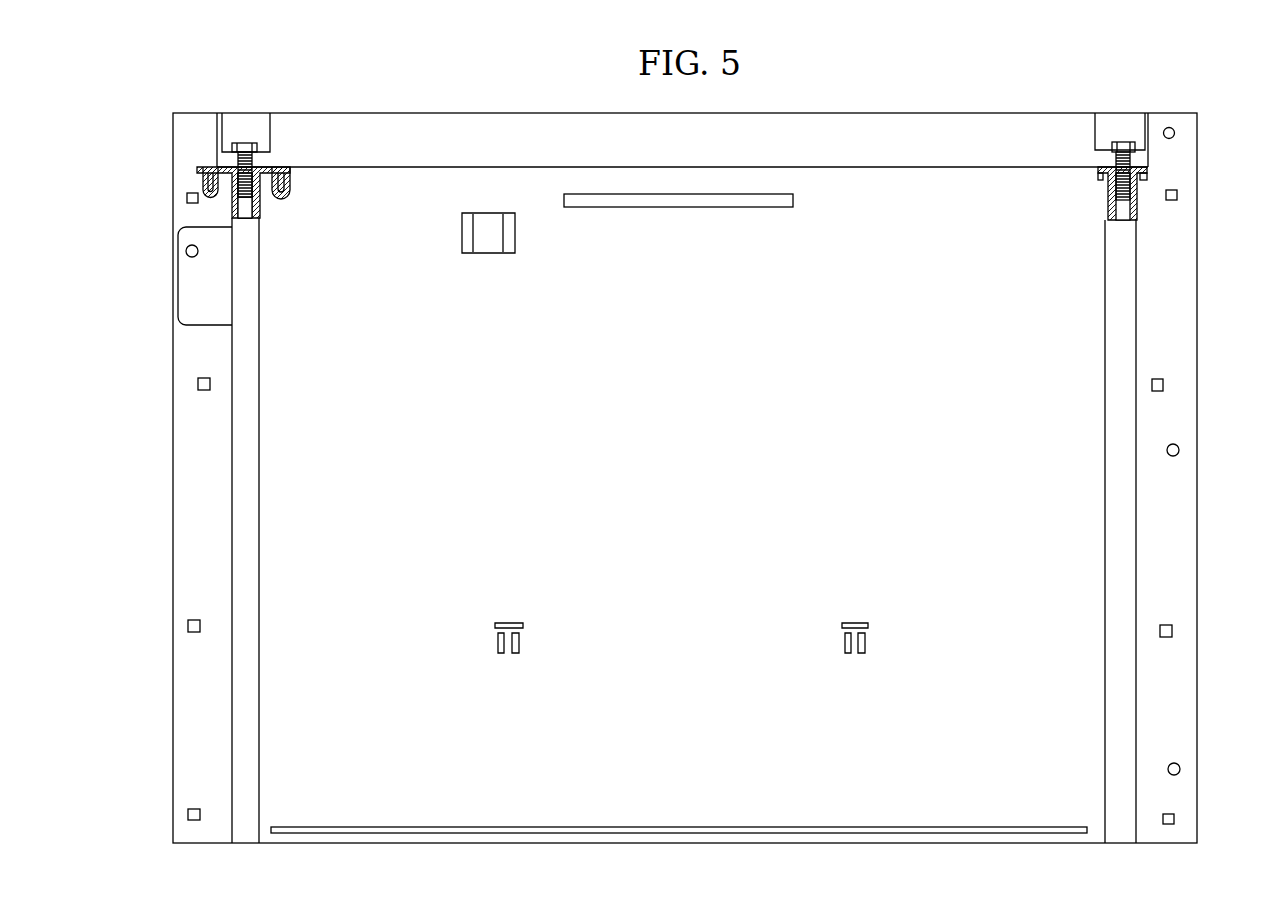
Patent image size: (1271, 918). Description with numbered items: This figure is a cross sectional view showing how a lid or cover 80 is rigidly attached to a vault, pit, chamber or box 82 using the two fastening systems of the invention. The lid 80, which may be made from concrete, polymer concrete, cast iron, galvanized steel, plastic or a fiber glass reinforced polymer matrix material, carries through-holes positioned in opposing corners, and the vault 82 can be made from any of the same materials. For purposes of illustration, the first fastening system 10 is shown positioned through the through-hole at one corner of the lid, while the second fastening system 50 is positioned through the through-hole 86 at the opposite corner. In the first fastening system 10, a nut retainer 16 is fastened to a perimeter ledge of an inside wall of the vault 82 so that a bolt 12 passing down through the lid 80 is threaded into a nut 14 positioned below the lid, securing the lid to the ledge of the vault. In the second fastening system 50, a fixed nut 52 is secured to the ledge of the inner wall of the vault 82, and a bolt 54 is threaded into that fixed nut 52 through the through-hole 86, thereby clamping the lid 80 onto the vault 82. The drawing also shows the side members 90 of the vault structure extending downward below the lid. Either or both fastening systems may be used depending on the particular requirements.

The fastening system 10 is at (245, 118).
The bolt 12 is at (253, 143).
The nut 14 is at (265, 167).
The nut retainer 16 is at (200, 184).
The fastening system 50 is at (1117, 118).
The fixed nut 52 is at (1165, 181).
The bolt 54 is at (1112, 143).
The lid 80 is at (762, 113).
The vault 82 is at (229, 113).
The through-hole 86 is at (1139, 113).
The column 90 is at (195, 346).